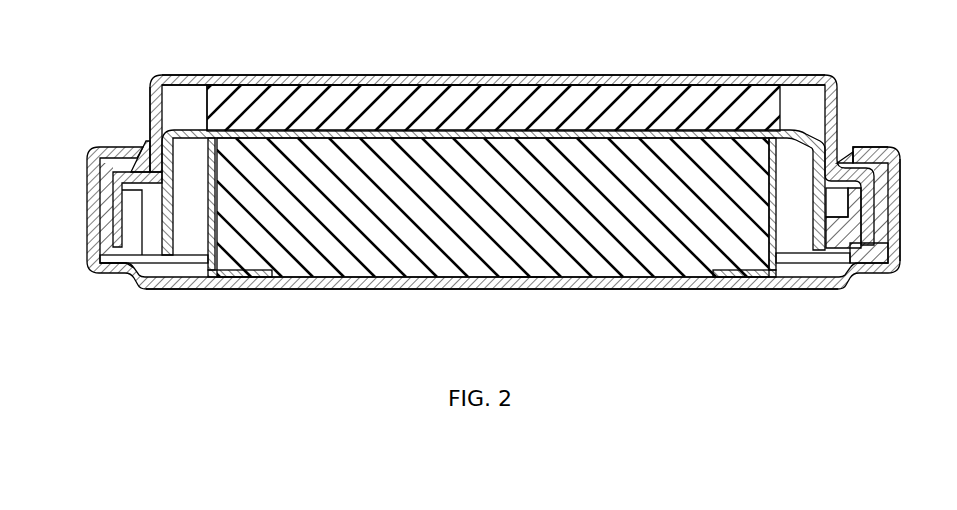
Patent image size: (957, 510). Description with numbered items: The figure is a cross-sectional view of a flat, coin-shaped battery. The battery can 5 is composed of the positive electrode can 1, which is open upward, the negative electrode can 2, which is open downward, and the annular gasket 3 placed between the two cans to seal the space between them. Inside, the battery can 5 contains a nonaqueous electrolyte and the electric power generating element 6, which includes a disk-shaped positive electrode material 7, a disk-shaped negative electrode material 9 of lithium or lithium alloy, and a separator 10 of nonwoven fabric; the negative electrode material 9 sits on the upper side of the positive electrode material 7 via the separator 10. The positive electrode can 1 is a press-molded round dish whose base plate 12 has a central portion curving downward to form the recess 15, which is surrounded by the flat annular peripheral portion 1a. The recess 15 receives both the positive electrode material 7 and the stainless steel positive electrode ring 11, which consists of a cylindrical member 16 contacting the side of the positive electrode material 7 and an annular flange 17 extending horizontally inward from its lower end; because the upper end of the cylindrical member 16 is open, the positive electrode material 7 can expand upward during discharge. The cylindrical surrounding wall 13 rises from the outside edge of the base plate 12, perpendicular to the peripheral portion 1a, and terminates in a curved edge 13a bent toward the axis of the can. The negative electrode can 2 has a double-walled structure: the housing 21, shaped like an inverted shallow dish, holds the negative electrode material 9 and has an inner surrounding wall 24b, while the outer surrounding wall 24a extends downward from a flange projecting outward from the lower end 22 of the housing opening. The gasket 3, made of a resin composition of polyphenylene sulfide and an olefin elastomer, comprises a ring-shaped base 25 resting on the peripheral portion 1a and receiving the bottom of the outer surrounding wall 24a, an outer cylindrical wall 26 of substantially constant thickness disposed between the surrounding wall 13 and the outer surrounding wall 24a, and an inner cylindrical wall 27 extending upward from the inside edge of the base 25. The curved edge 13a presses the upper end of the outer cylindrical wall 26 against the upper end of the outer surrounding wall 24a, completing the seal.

The positive electrode can 1 is at (404, 288).
The peripheral portion 1a is at (114, 263).
The negative electrode can 2 is at (506, 75).
The gasket 3 is at (880, 162).
The battery can 5 is at (836, 72).
The electric power generating element 6 is at (196, 112).
The positive electrode material 7 is at (581, 260).
The negative electrode material 9 is at (681, 95).
The separator 10 is at (649, 130).
The positive electrode ring 11 is at (189, 205).
The base plate 12 is at (470, 290).
The surrounding wall 13 is at (899, 238).
The curved edge 13a is at (867, 147).
The recess 15 is at (521, 264).
The cylindrical member 16 is at (208, 220).
The annular flange 17 is at (245, 277).
The housing 21 is at (423, 75).
The lower end 22 is at (137, 171).
The outer surrounding wall 24a is at (113, 207).
The inner surrounding wall 24b is at (150, 118).
The base 25 is at (868, 255).
The outer cylindrical wall 26 is at (886, 190).
The inner cylindrical wall 27 is at (850, 210).